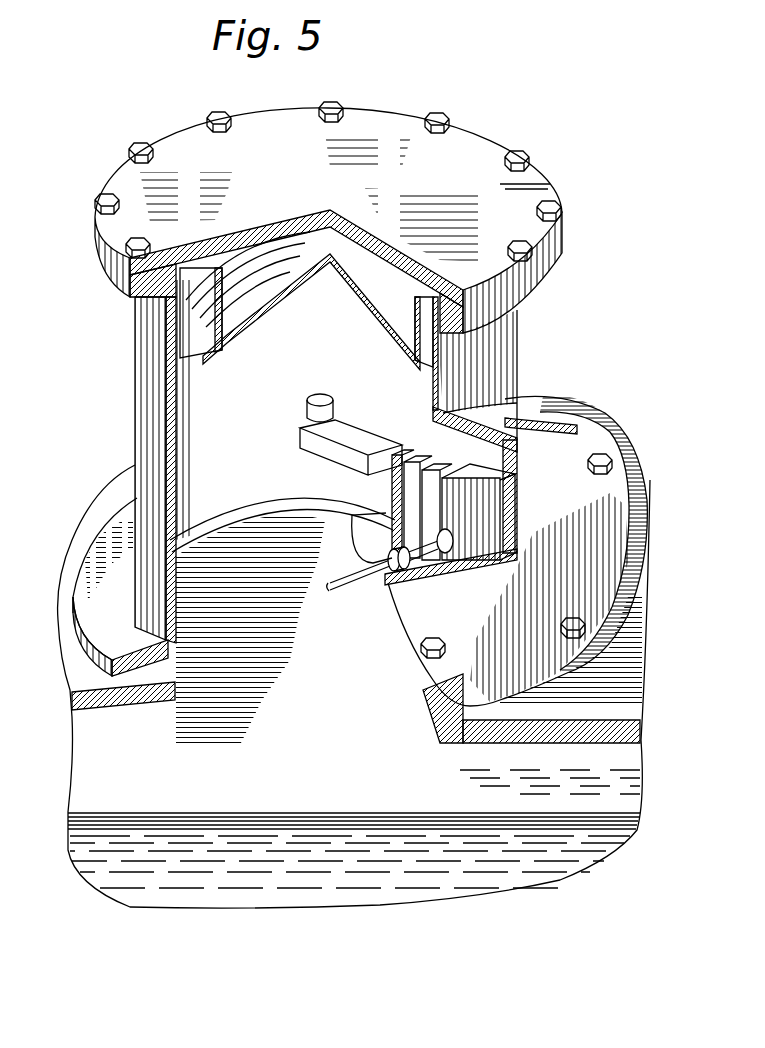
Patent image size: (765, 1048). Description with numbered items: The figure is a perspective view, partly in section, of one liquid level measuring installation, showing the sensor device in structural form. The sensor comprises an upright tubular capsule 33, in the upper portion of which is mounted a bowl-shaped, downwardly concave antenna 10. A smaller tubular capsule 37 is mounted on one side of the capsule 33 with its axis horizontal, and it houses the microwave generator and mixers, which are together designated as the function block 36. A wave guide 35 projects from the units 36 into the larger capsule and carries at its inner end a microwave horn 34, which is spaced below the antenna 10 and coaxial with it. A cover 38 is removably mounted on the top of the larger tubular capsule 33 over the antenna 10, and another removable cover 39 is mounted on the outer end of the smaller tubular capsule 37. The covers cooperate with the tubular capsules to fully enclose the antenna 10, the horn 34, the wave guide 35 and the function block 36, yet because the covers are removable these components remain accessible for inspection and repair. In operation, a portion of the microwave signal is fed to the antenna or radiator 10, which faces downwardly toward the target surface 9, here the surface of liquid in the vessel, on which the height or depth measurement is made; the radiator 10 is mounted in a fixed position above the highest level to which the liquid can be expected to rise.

The target surface 9 is at (590, 822).
The antenna 10 is at (272, 265).
The upright tubular capsule 33 is at (140, 400).
The microwave horn 34 is at (312, 407).
The wave guide 35 is at (330, 447).
The microwave generator and mixers 36 is at (394, 493).
The smaller tubular capsule 37 is at (543, 397).
The cover 38 is at (480, 148).
The removable cover 39 is at (580, 450).